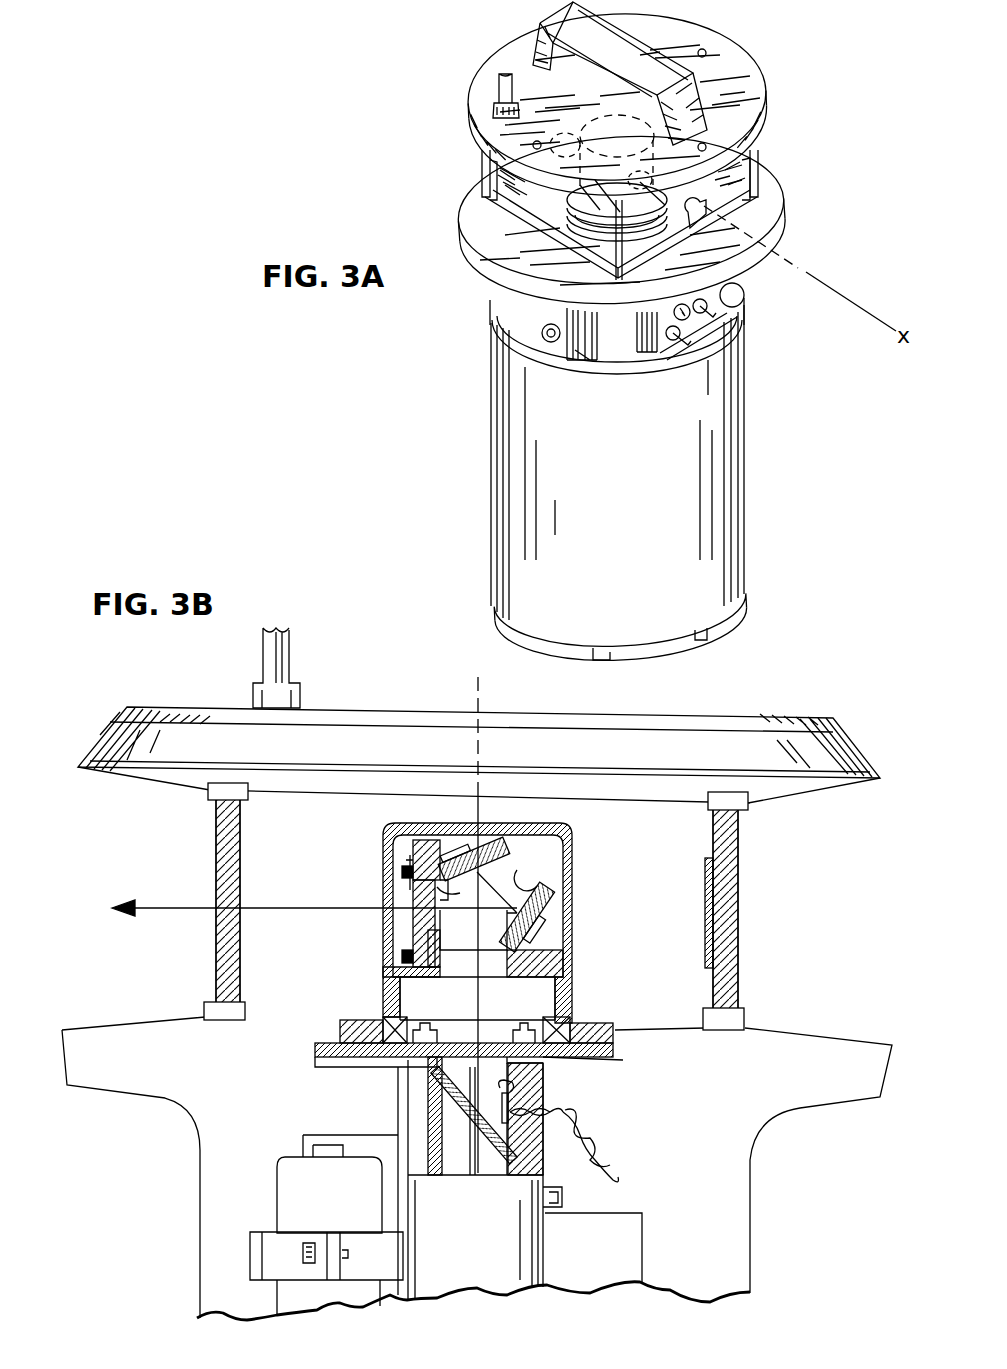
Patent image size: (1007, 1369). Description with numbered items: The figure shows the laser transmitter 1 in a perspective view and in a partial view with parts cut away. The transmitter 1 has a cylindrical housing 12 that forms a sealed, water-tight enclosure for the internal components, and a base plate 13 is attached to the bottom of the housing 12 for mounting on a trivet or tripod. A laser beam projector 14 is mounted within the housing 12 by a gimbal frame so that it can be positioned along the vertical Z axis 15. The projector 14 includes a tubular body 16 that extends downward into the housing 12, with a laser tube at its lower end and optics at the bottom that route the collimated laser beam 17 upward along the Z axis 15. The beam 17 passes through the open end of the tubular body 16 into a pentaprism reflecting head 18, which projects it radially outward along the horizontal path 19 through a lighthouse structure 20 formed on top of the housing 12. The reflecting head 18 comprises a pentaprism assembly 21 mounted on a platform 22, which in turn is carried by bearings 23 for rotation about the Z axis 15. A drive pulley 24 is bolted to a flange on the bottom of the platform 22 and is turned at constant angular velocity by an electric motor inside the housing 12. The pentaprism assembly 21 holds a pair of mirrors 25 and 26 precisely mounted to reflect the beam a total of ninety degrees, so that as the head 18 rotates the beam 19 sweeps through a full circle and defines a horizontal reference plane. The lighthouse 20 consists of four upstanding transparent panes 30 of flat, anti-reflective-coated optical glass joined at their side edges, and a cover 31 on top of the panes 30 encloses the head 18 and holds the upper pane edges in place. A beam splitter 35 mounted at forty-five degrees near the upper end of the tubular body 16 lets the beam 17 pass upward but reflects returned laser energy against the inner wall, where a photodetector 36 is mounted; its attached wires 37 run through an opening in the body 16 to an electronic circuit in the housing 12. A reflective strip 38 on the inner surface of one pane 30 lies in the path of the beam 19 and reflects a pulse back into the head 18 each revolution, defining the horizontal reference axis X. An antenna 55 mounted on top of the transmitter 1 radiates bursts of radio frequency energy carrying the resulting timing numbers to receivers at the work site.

In FIG. 3A, the laser transmitter 1 is at (480, 430).
In FIG. 3B, the laser transmitter 1 is at (812, 1157).
In FIG. 3A, the cylindrical housing 12 is at (636, 531).
In FIG. 3B, the cylindrical housing 12 is at (200, 1150).
In FIG. 3A, the base plate 13 is at (494, 607).
In FIG. 3B, the laser beam projector 14 is at (570, 1105).
In FIG. 3B, the Z axis 15 is at (478, 682).
In FIG. 3B, the tubular body 16 is at (485, 1230).
In FIG. 3B, the laser beam 17 is at (470, 1150).
In FIG. 3A, the pentaprism reflecting head 18 is at (620, 214).
In FIG. 3B, the pentaprism reflecting head 18 is at (573, 934).
In FIG. 3B, the horizontal path 19 is at (180, 907).
In FIG. 3A, the lighthouse structure 20 is at (771, 133).
In FIG. 3B, the lighthouse structure 20 is at (760, 827).
In FIG. 3B, the pentaprism assembly 21 is at (510, 842).
In FIG. 3B, the platform 22 is at (572, 983).
In FIG. 3B, the bearings 23 is at (575, 1020).
In FIG. 3B, the drive pulley 24 is at (598, 1054).
In FIG. 3B, the mirror 25 is at (447, 890).
In FIG. 3B, the mirror 26 is at (520, 882).
In FIG. 3A, the transparent panes 30 is at (523, 185).
In FIG. 3B, the transparent panes 30 is at (216, 845).
In FIG. 3A, the cover 31 is at (578, 101).
In FIG. 3B, the cover 31 is at (366, 757).
In FIG. 3B, the beam splitter 35 is at (457, 1100).
In FIG. 3B, the photodetector 36 is at (528, 1082).
In FIG. 3B, the wires 37 is at (590, 1155).
In FIG. 3A, the reflective strip 38 is at (702, 214).
In FIG. 3B, the reflective strip 38 is at (708, 862).
In FIG. 3A, the antenna 55 is at (497, 104).
In FIG. 3B, the antenna 55 is at (292, 650).